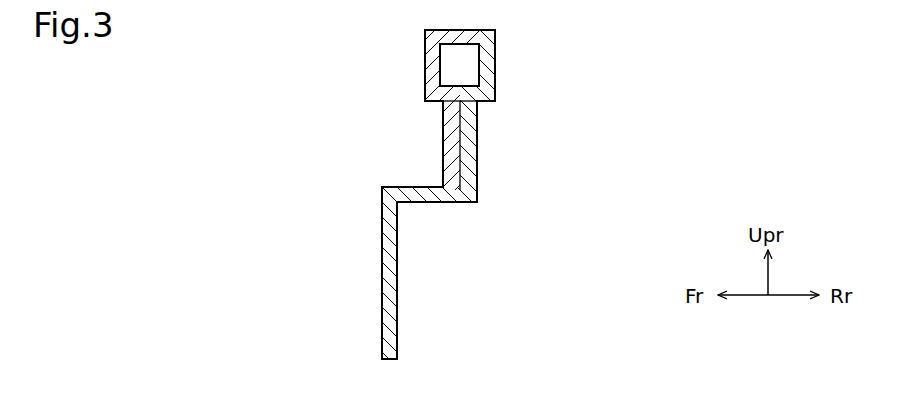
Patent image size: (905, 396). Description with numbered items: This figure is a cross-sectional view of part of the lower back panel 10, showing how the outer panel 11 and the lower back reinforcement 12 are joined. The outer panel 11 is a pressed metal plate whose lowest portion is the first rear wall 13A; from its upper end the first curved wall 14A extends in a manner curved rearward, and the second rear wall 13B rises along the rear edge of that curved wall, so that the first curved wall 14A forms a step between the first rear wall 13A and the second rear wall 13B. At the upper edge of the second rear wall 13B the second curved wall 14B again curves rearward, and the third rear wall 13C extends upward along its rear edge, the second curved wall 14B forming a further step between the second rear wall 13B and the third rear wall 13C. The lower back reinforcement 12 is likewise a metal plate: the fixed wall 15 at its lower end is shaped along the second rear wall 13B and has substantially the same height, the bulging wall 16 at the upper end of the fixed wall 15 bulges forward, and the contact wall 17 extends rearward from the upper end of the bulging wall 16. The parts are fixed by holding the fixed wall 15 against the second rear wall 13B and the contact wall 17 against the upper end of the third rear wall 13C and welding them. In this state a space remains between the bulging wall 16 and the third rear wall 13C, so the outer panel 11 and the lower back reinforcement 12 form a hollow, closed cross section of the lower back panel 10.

The lower back panel 10 is at (287, 77).
The outer panel 11 is at (495, 43).
The lower back reinforcement 12 is at (425, 83).
The first rear wall 13A is at (397, 300).
The second rear wall 13B is at (477, 150).
The third rear wall 13C is at (495, 75).
The first curved wall 14A is at (426, 185).
The second curved wall 14B is at (474, 88).
The fixed wall 15 is at (443, 138).
The bulging wall 16 is at (425, 47).
The contact wall 17 is at (447, 31).